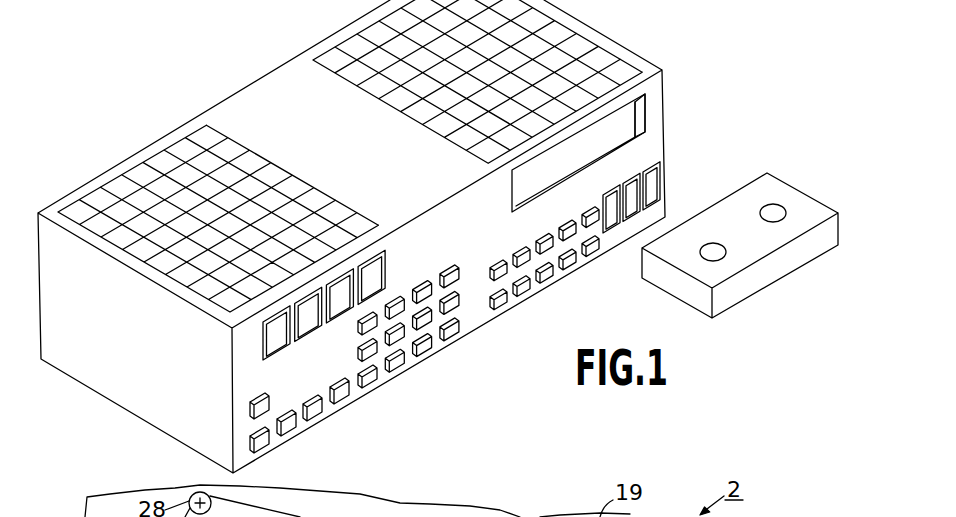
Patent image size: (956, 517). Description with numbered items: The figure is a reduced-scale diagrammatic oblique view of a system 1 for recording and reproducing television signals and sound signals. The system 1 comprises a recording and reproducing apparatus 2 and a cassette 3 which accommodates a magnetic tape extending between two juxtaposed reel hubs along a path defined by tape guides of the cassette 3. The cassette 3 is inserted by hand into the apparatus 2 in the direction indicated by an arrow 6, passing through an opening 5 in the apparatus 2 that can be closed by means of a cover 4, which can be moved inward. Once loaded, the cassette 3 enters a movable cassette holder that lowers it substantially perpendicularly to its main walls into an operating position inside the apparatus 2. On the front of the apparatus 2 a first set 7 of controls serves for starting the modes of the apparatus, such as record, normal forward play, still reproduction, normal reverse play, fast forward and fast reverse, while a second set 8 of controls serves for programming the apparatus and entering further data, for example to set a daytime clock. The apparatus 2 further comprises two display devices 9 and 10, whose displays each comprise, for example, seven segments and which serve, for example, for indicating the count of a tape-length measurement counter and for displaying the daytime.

The system 1 is at (757, 102).
The recording and reproducing apparatus 2 is at (228, 98).
The cassette 3 is at (728, 320).
The cover 4 is at (624, 121).
The opening 5 is at (636, 137).
The arrow 6 is at (740, 269).
The first set of controls 7 is at (555, 290).
The second set of controls 8 is at (435, 363).
The display device 9 is at (645, 217).
The display device 10 is at (446, 246).